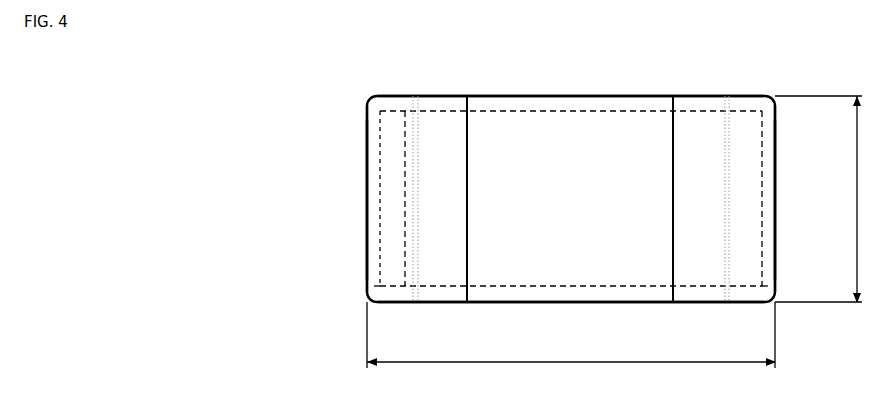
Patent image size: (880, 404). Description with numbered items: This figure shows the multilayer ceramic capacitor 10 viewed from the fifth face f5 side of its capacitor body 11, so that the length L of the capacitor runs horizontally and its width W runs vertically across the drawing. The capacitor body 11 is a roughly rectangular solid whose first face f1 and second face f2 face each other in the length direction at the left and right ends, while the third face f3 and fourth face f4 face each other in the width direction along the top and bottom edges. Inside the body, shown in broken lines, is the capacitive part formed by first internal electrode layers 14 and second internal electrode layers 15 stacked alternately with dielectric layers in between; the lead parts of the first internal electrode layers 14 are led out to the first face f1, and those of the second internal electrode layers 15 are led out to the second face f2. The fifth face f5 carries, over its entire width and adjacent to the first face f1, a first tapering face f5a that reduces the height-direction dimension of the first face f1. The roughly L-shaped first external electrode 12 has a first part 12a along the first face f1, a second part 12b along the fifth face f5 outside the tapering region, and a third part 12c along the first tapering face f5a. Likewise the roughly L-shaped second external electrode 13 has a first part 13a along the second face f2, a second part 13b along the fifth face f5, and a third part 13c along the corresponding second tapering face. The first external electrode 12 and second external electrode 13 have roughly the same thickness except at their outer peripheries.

The multilayer ceramic capacitor 10 is at (488, 95).
The capacitor body 11 is at (525, 96).
The first external electrode 12 is at (367, 168).
The second external electrode 13 is at (775, 168).
The first internal electrode layer 14 is at (380, 120).
The second internal electrode layer 15 is at (757, 132).
The first part 12a is at (384, 241).
The second part 12b is at (440, 262).
The third part 12c is at (389, 276).
The first part 13a is at (767, 242).
The second part 13b is at (703, 262).
The third part 13c is at (752, 277).
The first face f1 is at (378, 206).
The second face f2 is at (764, 206).
The third face f3 is at (584, 96).
The fourth face f4 is at (585, 302).
The fifth face f5 is at (626, 128).
The first tapering face f5a is at (394, 99).
The length L is at (571, 345).
The width W is at (825, 199).